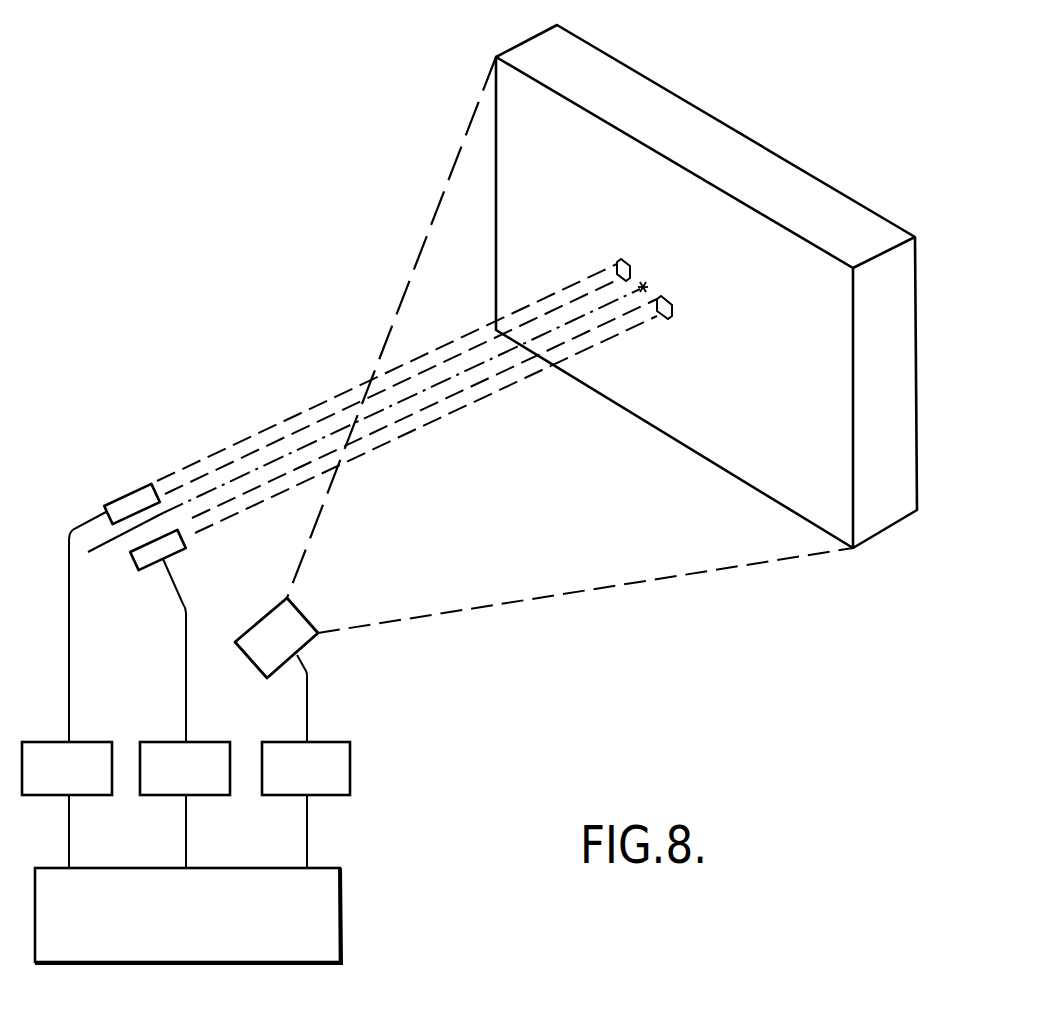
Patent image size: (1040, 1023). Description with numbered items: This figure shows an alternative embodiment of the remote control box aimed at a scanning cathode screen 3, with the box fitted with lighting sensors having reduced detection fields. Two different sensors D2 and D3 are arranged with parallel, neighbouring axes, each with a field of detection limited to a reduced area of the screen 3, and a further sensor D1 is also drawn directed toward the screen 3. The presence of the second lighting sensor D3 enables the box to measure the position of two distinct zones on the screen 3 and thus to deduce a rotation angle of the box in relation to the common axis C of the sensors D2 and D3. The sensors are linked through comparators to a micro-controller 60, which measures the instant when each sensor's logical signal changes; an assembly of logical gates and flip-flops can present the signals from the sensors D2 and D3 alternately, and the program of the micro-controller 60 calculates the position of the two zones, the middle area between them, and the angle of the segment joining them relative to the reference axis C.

The cathode screen 3 is at (657, 112).
The common axis C is at (665, 279).
The first detector D1 is at (288, 642).
The lighting sensor D2 is at (133, 500).
The second lighting sensor D3 is at (157, 548).
The micro-controller 60 is at (342, 902).